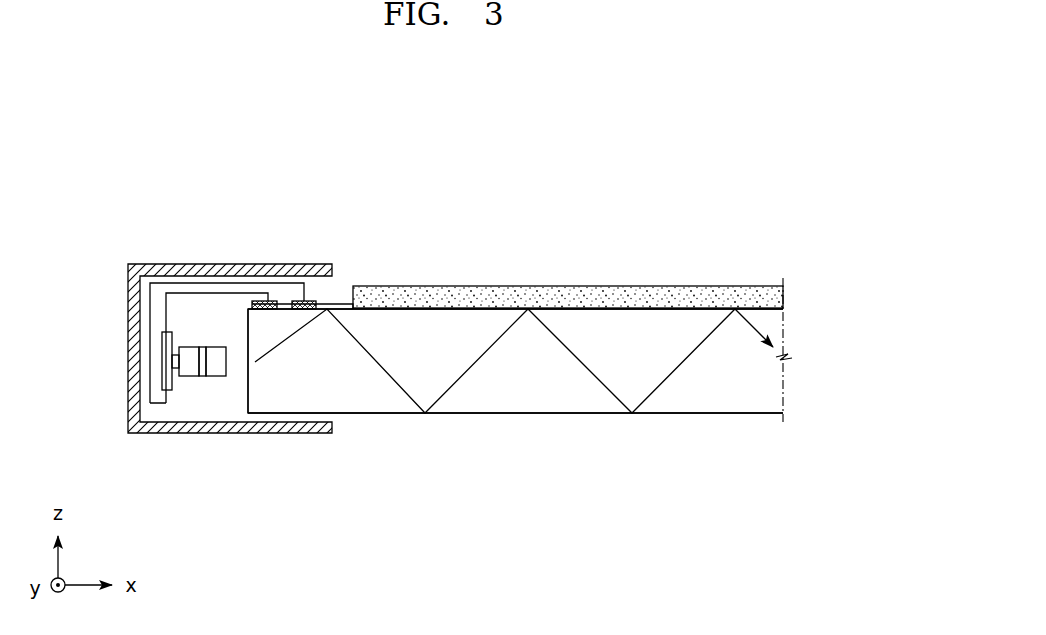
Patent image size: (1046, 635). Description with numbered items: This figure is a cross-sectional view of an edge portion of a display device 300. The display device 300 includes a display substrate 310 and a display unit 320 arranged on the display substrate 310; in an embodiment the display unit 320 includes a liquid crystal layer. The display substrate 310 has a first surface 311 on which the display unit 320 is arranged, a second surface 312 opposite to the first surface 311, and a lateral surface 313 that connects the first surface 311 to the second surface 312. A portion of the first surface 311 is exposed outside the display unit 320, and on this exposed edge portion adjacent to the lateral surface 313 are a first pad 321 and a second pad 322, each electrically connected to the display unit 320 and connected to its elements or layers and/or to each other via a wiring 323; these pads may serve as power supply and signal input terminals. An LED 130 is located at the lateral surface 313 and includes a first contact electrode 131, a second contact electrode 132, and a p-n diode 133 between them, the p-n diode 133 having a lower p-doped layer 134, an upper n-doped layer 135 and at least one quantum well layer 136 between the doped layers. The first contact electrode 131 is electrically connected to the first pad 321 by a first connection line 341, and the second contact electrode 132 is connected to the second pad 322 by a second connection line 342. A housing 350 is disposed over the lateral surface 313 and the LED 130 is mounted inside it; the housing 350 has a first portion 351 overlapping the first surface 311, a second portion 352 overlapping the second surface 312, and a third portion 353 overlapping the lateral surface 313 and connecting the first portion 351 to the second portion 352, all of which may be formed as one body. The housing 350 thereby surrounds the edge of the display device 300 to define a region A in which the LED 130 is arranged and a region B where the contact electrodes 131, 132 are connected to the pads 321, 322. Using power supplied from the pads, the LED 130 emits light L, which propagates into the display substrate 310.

The display device 300 is at (723, 200).
The display substrate 310 is at (777, 385).
The first surface 311 is at (645, 308).
The second surface 312 is at (710, 413).
The lateral surface 313 is at (248, 393).
The display unit 320 is at (778, 298).
The first pad 321 is at (270, 301).
The second pad 322 is at (306, 301).
The wiring 323 is at (345, 304).
The LED 130 is at (155, 396).
The first contact electrode 131 is at (168, 343).
The second contact electrode 132 is at (168, 380).
The p-n diode 133 is at (135, 482).
The lower p-doped layer 134 is at (188, 376).
The upper n-doped layer 135 is at (216, 376).
The quantum well layer 136 is at (201, 376).
The first connection line 341 is at (183, 283).
The second connection line 342 is at (215, 293).
The housing 350 is at (141, 257).
The first portion 351 is at (242, 272).
The second portion 352 is at (308, 430).
The third portion 353 is at (132, 325).
The region A is at (206, 316).
The region B is at (290, 293).
The light L is at (460, 378).